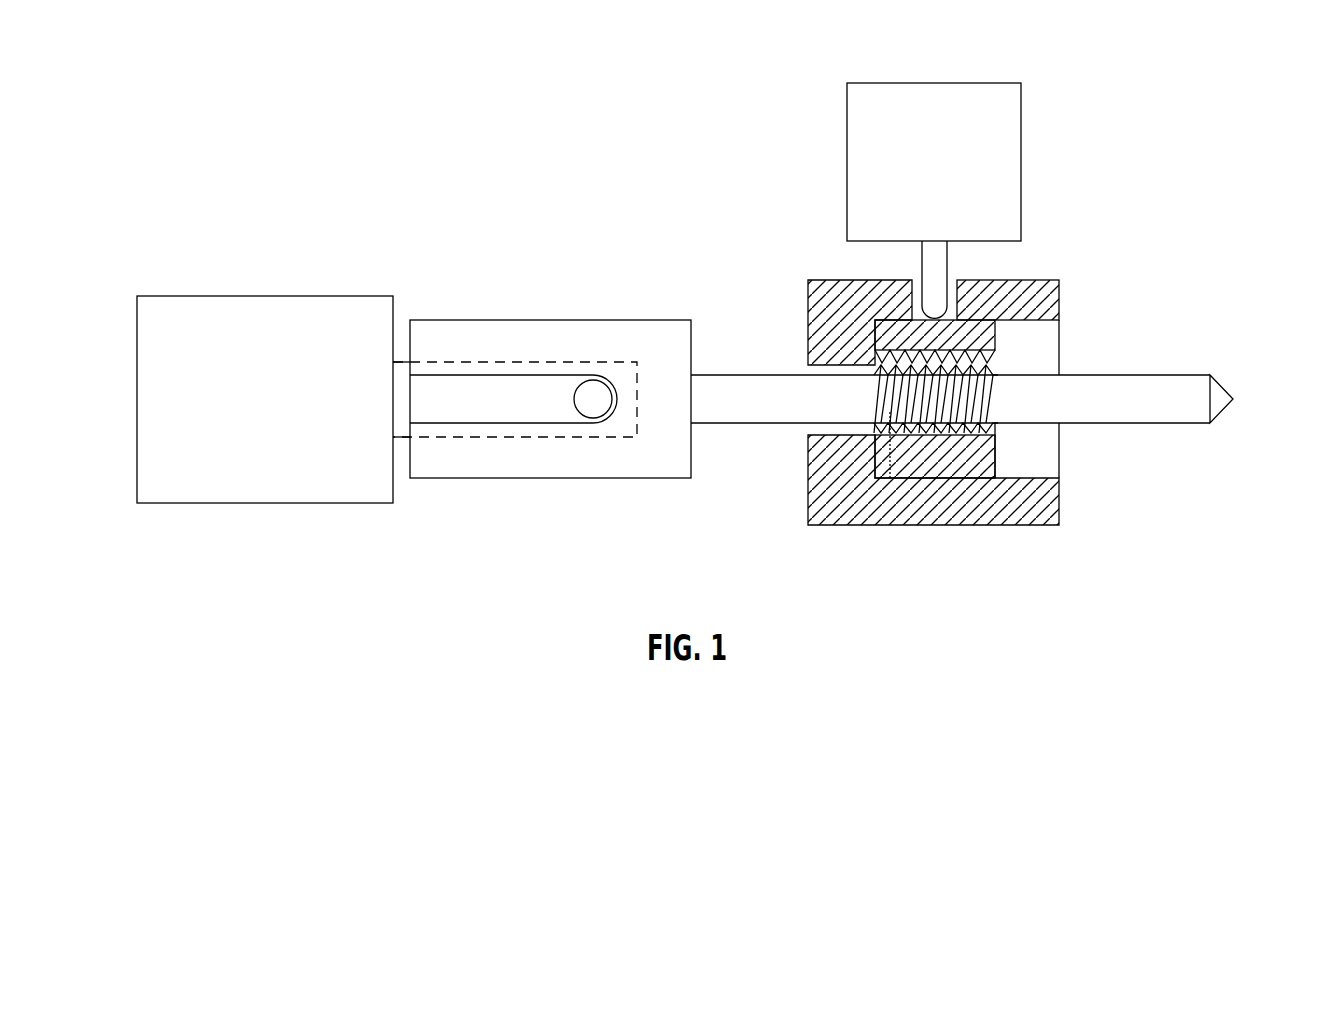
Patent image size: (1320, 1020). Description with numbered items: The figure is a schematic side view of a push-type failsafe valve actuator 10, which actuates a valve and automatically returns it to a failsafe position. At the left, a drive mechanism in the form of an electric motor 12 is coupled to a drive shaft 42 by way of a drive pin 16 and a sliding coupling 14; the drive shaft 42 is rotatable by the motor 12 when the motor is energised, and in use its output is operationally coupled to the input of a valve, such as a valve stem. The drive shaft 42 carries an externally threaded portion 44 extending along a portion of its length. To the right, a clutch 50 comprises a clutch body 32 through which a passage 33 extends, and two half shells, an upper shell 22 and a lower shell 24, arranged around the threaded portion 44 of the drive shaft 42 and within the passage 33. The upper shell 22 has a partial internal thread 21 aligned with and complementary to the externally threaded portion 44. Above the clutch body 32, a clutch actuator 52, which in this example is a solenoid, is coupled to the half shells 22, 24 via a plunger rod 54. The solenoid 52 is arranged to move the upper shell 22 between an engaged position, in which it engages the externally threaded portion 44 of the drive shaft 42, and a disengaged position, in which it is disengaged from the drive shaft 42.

The failsafe valve actuator 10 is at (297, 160).
The electric motor 12 is at (210, 487).
The sliding coupling 14 is at (557, 335).
The drive pin 16 is at (594, 400).
The partial internal thread 21 is at (878, 363).
The upper shell 22 is at (1000, 345).
The lower shell 24 is at (1000, 463).
The clutch body 32 is at (1017, 513).
The passage 33 is at (1047, 360).
The drive shaft 42 is at (1193, 386).
The externally threaded portion 44 is at (890, 478).
The clutch 50 is at (789, 160).
The clutch actuator 52 is at (995, 128).
The plunger rod 54 is at (935, 277).